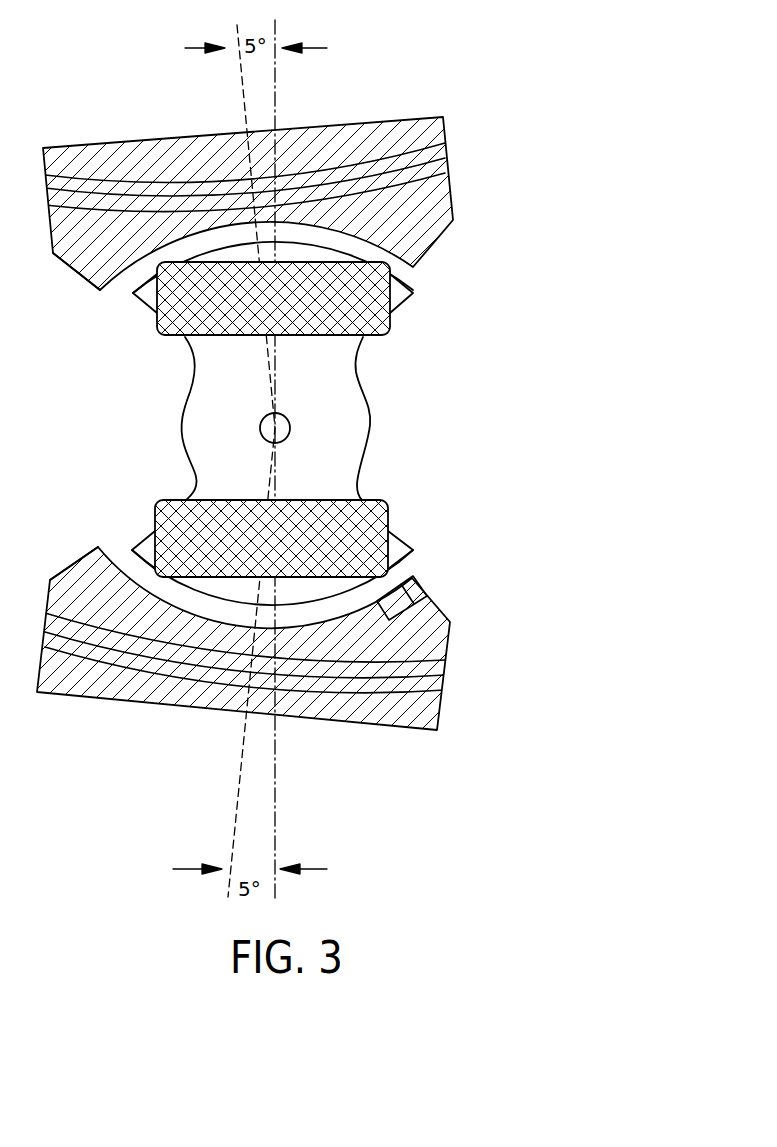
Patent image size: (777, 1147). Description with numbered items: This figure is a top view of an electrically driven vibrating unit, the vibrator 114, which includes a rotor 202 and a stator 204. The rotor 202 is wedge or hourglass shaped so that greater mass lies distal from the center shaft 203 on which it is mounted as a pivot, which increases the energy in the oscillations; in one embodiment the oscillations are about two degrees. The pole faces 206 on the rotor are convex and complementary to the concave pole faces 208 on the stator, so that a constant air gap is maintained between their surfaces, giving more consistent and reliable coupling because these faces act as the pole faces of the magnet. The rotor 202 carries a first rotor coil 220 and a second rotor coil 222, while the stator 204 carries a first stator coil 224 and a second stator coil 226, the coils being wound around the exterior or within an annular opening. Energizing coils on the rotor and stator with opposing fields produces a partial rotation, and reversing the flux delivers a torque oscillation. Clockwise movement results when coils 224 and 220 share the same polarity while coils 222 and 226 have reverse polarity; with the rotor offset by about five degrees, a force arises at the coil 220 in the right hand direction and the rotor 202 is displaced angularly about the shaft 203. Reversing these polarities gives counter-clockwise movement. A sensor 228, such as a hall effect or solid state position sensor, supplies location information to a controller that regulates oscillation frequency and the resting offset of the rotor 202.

The vibrator 114 is at (520, 107).
The rotor 202 is at (370, 410).
The center shaft 203 is at (261, 431).
The stator 204 is at (403, 118).
The pole faces on the rotor 206 is at (408, 284).
The pole faces on the stator 208 is at (120, 290).
The first rotor coil 220 is at (390, 328).
The second rotor coil 222 is at (390, 510).
The first stator coil 224 is at (420, 182).
The second stator coil 226 is at (420, 690).
The sensor 228 is at (415, 596).